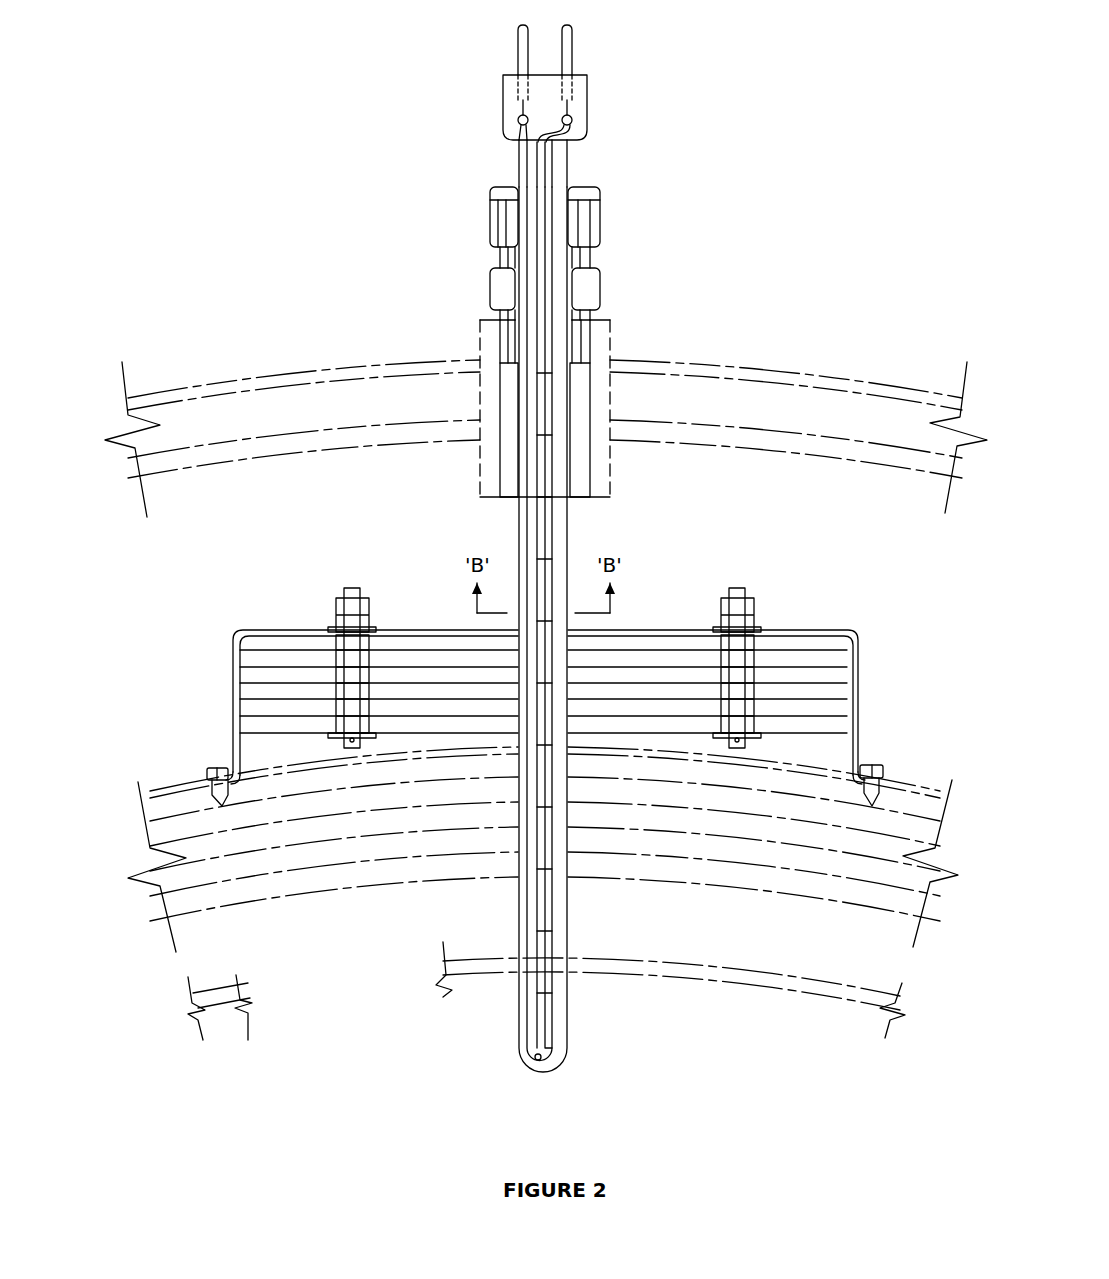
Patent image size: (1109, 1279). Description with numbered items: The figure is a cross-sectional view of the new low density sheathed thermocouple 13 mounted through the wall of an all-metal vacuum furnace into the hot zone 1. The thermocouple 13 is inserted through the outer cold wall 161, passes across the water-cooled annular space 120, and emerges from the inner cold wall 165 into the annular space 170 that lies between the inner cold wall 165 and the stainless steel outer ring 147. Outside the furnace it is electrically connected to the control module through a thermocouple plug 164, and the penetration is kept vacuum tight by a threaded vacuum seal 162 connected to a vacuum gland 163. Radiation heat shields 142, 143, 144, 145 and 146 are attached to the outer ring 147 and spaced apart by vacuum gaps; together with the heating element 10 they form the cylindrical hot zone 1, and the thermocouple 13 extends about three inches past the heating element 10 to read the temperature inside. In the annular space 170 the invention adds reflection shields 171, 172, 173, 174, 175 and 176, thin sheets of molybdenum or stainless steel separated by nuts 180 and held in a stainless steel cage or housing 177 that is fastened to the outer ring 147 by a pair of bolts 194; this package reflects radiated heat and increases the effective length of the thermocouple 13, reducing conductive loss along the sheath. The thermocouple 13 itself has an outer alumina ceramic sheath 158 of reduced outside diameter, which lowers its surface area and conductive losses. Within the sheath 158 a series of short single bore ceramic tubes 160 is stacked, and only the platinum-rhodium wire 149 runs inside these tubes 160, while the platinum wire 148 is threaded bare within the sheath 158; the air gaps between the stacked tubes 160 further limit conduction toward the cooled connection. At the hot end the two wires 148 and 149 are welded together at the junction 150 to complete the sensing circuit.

The hot zone 1 is at (683, 1104).
The heating element 10 is at (722, 982).
The thermocouple 13 is at (578, 165).
The water-cooled annular space 120 is at (738, 408).
The radiation heat shield 142 is at (345, 890).
The radiation heat shield 143 is at (303, 868).
The radiation heat shield 144 is at (265, 840).
The radiation heat shield 145 is at (228, 833).
The radiation heat shield 146 is at (192, 822).
The outer ring 147 is at (165, 785).
The thermocouple wire 148 is at (530, 990).
The thermocouple wire 149 is at (548, 882).
The junction 150 is at (525, 1060).
The outer ceramic sheath 158 is at (570, 517).
The single bore ceramic tube 160 is at (553, 545).
The outer cold wall 161 is at (297, 368).
The threaded vacuum seal 162 is at (498, 332).
The vacuum gland 163 is at (490, 215).
The thermocouple plug 164 is at (503, 100).
The inner cold wall 165 is at (815, 457).
The annular space 170 is at (824, 530).
The reflection shield 171 is at (437, 732).
The reflection shield 172 is at (405, 712).
The reflection shield 173 is at (370, 697).
The reflection shield 174 is at (333, 682).
The reflection shield 175 is at (302, 665).
The reflection shield 176 is at (275, 650).
The housing 177 is at (232, 636).
The nuts 180 is at (755, 600).
The bolts 194 is at (875, 760).